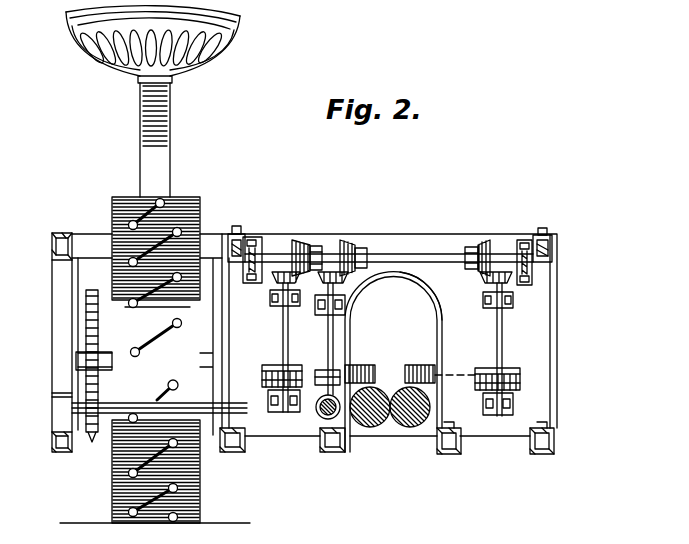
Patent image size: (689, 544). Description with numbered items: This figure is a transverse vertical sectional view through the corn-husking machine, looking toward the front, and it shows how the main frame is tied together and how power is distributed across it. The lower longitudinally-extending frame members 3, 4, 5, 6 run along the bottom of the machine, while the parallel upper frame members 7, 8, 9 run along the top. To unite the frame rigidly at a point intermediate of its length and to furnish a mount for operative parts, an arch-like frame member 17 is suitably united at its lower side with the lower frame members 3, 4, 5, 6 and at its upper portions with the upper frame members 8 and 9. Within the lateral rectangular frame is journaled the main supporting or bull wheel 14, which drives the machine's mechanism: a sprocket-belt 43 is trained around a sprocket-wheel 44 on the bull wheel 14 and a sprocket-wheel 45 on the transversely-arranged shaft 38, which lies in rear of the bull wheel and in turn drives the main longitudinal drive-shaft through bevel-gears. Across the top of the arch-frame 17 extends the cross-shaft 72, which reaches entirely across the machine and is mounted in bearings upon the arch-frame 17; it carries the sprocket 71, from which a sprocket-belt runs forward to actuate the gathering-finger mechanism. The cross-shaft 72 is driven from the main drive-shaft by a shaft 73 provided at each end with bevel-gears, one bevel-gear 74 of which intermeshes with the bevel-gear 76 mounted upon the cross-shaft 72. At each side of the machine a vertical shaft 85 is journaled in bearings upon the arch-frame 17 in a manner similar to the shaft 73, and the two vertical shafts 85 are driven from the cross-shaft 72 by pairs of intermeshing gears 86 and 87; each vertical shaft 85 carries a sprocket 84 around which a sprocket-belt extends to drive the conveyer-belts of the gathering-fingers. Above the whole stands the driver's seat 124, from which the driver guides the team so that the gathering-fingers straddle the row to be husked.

The driver's seat 124 is at (160, 153).
The upper frame member 7 is at (52, 236).
The upper frame member 8 is at (230, 236).
The upper frame member 9 is at (554, 239).
The sprocket 71 is at (252, 240).
The intermeshing gear 87 is at (299, 244).
The bevel-gear 76 is at (347, 244).
The cross-shaft 72 is at (373, 256).
The intermeshing gear 86 is at (280, 278).
The vertical shaft 85 is at (282, 318).
The shaft 73 is at (329, 331).
The bevel-gear 74 is at (348, 283).
The arch-like frame member 17 is at (440, 312).
The sprocket-wheel 44 is at (95, 286).
The sprocket-belt 43 is at (86, 352).
The bull wheel 14 is at (156, 348).
The transversely-arranged shaft 38 is at (121, 404).
The sprocket-wheel 45 is at (92, 442).
The sprocket 84 is at (270, 372).
The lower frame member 3 is at (237, 452).
The lower frame member 4 is at (333, 452).
The lower frame member 5 is at (448, 454).
The lower frame member 6 is at (546, 454).